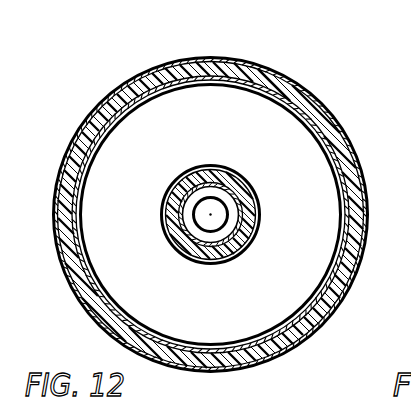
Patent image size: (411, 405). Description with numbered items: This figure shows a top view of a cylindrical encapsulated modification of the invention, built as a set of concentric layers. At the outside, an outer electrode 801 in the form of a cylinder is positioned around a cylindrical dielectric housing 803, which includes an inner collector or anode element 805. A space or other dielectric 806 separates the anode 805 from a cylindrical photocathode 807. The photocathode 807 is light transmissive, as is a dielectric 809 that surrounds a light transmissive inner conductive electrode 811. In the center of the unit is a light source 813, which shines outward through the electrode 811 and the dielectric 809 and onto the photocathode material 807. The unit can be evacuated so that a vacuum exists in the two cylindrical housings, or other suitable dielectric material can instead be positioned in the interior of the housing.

The outer electrode 801 is at (353, 157).
The cylindrical dielectric housing 803 is at (356, 175).
The inner collector or anode element 805 is at (317, 140).
The space or other dielectric 806 is at (262, 110).
The cylindrical photocathode 807 is at (187, 176).
The dielectric 809 is at (167, 212).
The inner conductive electrode 811 is at (173, 241).
The light source 813 is at (217, 213).